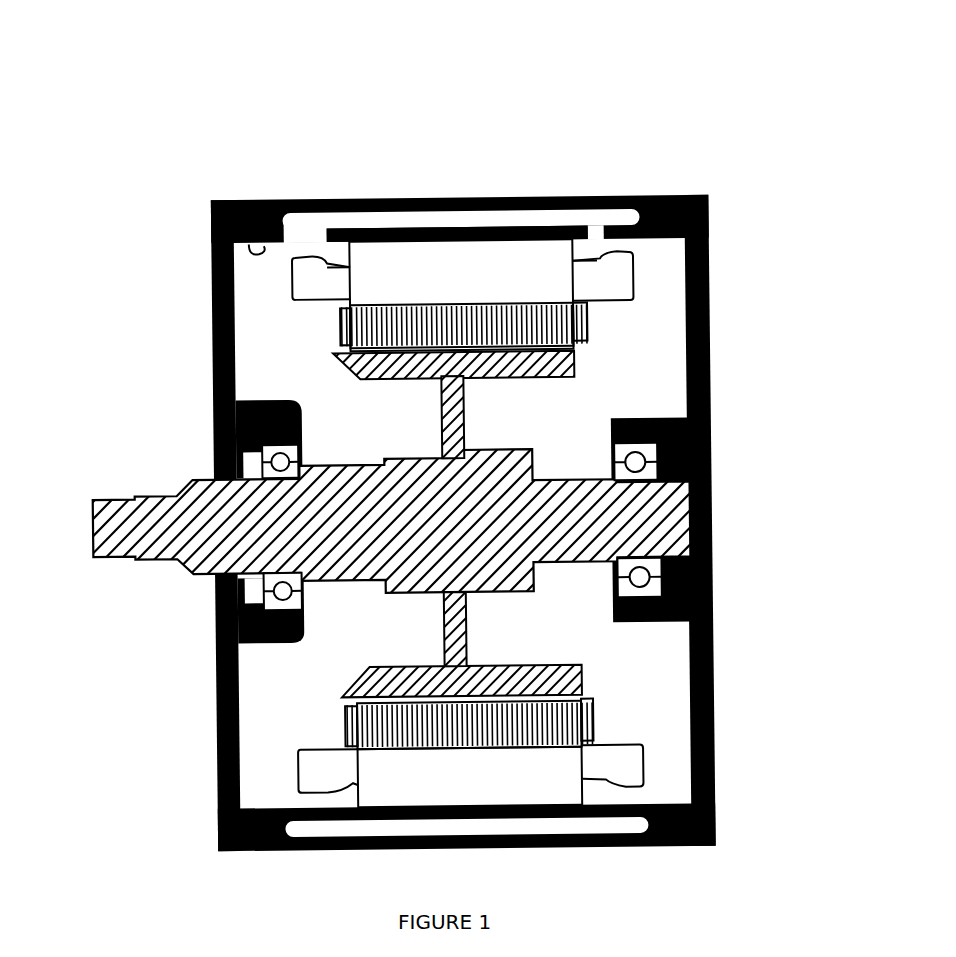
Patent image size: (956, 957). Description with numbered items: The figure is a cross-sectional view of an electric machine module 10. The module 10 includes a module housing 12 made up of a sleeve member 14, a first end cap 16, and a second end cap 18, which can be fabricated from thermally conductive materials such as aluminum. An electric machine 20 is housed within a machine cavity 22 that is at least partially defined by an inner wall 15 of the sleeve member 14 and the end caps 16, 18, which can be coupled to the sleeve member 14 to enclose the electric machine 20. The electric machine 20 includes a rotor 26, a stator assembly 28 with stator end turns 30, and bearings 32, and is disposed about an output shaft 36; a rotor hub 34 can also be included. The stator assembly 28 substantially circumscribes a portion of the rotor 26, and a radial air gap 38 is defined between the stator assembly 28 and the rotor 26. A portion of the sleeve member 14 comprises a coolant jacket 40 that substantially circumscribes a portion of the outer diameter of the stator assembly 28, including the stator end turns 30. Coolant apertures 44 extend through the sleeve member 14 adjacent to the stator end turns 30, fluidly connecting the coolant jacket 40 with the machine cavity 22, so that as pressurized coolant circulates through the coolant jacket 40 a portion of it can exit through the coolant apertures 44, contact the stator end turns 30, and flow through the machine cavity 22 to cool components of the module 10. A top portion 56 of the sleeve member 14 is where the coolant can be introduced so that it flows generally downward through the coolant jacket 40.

The electric machine module 10 is at (478, 478).
The module housing 12 is at (473, 506).
The sleeve member 14 is at (472, 507).
The inner wall 15 is at (272, 200).
The first end cap 16 is at (212, 255).
The second end cap 18 is at (710, 225).
The electric machine 20 is at (462, 520).
The machine cavity 22 is at (478, 478).
The rotor 26 is at (578, 722).
The stator assembly 28 is at (548, 785).
The stator end turns 30 is at (630, 770).
The bearings 32 is at (710, 437).
The rotor hub 34 is at (447, 633).
The output shaft 36 is at (95, 538).
The radial air gap 38 is at (358, 745).
The coolant jacket 40 is at (490, 223).
The coolant apertures 44 is at (315, 237).
The top portion 56 is at (490, 164).